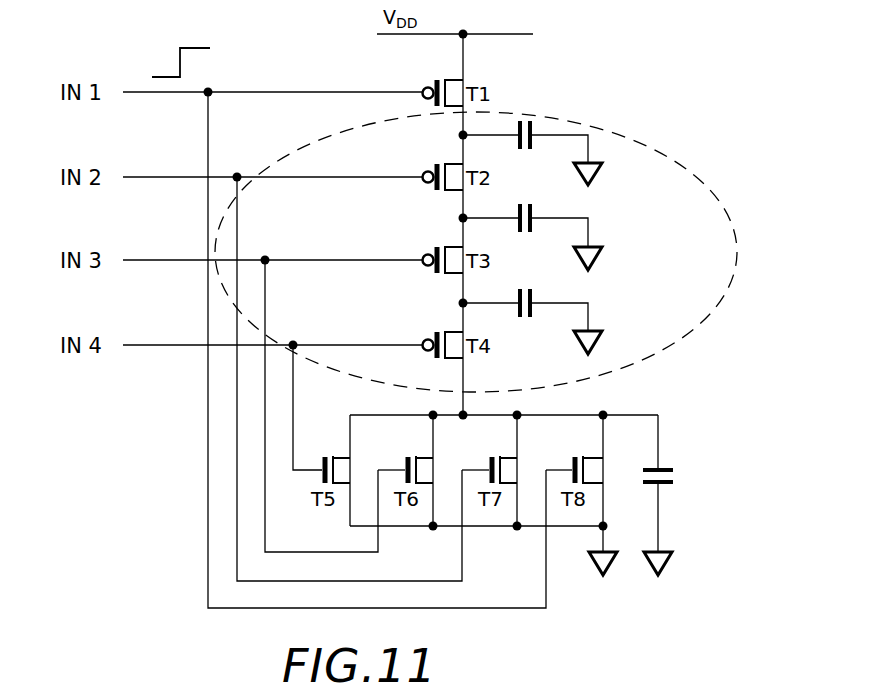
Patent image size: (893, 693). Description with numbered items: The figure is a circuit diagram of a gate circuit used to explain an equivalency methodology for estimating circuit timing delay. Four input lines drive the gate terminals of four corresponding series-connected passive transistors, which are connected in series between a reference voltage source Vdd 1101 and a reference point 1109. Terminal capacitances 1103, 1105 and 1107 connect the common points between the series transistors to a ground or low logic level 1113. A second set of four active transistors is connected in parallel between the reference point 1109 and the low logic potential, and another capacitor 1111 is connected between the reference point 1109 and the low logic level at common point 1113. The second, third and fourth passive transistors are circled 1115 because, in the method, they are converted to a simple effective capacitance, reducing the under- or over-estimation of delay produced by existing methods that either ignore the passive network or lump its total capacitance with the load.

The reference voltage source Vdd 1101 is at (463, 34).
The terminal capacitance 1103 is at (531, 150).
The terminal capacitance 1105 is at (531, 233).
The terminal capacitance 1107 is at (531, 318).
The reference point 1109 is at (603, 415).
The capacitor 1111 is at (668, 468).
The ground or low logic level 1113 is at (664, 552).
The circled transistors 1115 is at (732, 194).